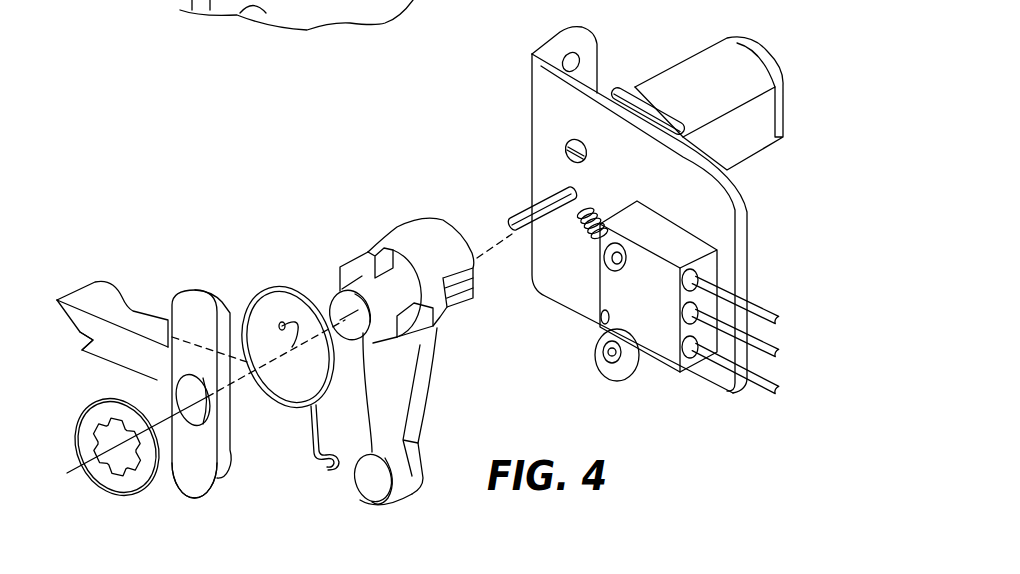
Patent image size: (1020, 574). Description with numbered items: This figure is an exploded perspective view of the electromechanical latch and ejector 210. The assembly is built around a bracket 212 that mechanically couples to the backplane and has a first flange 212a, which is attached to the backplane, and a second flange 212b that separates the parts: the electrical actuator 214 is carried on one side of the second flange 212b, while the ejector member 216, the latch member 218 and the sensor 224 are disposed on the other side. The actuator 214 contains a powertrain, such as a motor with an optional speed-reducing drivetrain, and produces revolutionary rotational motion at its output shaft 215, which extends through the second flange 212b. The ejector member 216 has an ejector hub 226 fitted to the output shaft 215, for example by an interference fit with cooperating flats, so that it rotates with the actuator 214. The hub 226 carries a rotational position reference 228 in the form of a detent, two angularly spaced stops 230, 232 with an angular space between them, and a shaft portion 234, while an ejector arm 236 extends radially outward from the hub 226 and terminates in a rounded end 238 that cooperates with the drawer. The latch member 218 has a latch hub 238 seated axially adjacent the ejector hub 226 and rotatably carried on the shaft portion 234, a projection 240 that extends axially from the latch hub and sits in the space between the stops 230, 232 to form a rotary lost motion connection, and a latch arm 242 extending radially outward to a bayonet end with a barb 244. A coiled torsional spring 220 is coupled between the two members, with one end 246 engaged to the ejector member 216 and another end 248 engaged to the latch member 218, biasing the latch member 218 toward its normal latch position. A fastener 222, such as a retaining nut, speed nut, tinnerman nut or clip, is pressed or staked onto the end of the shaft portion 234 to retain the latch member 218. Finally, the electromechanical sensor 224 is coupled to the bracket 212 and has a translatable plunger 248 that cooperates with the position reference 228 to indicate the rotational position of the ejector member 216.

The electromechanical latch and ejector 210 is at (225, 137).
The bracket 212 is at (524, 53).
The first flange 212a is at (548, 40).
The second flange 212b is at (713, 197).
The electrical actuator 214 is at (661, 55).
The output shaft 215 is at (520, 205).
The ejector member 216 is at (385, 205).
The latch member 218 is at (159, 266).
The spring 220 is at (280, 255).
The fastener 222 is at (75, 393).
The sensor 224 is at (672, 383).
The ejector hub 226 is at (413, 218).
The rotational position reference 228 is at (524, 305).
The stop 230 is at (386, 262).
The stop 232 is at (413, 310).
The shaft portion 234 is at (376, 312).
The ejector arm 236 is at (397, 410).
The end / latch hub 238 is at (230, 418).
The projection 240 is at (243, 330).
The latch arm 242 is at (117, 333).
The barb 244 is at (83, 349).
The spring end 246 is at (312, 463).
The spring end / translatable plunger 248 is at (287, 332).